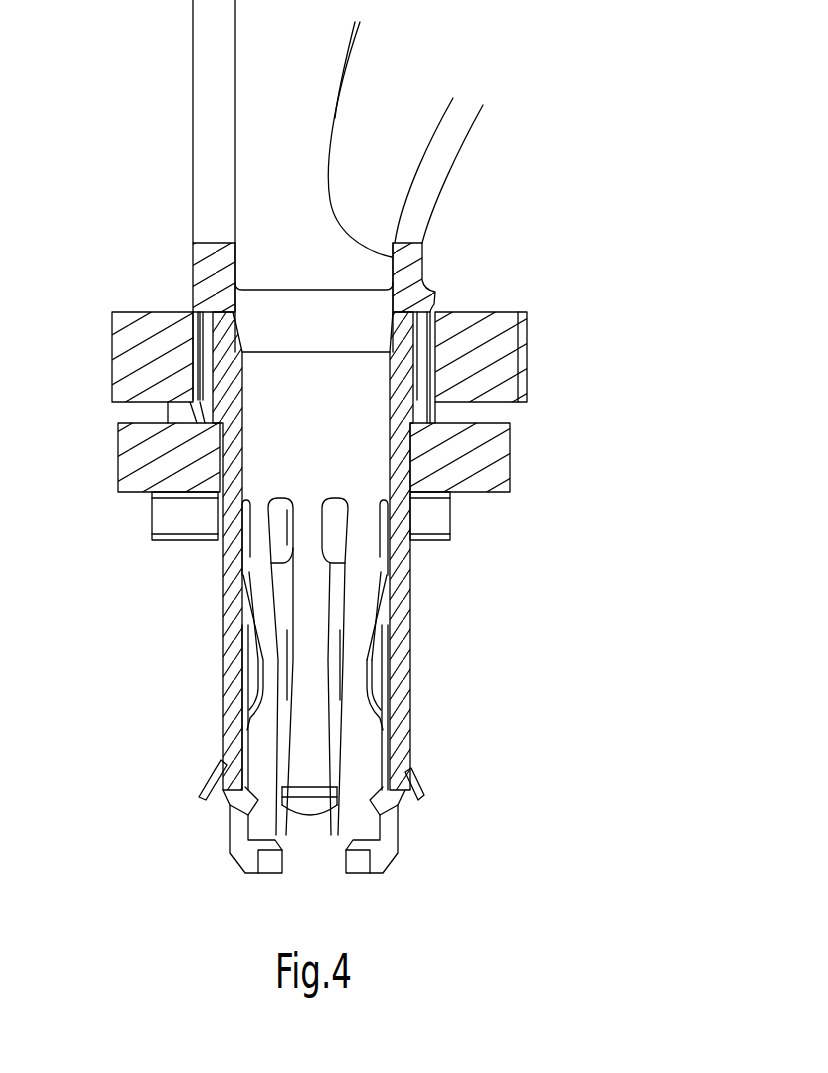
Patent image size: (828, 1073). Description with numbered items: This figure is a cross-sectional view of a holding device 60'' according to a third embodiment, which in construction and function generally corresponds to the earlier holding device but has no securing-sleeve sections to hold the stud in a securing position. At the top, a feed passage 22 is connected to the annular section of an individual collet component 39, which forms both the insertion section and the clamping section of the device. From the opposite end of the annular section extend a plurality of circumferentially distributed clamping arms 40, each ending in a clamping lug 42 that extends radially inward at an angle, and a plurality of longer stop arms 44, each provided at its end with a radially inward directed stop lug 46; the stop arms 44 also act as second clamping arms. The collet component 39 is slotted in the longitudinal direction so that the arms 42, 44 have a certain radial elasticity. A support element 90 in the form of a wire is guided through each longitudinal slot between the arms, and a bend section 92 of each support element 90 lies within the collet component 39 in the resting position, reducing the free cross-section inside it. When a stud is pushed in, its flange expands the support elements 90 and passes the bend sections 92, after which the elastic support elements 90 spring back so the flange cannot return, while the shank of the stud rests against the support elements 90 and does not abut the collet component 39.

The feed passage 22 is at (415, 130).
The holding device 60'' is at (468, 491).
The collet component 39 is at (350, 408).
The clamping arm 40 is at (233, 672).
The support element 90 is at (377, 623).
The bend section 92 is at (363, 680).
The clamping lug 42 is at (397, 788).
The stop arm 44 is at (380, 853).
The stop lug 46 is at (270, 863).